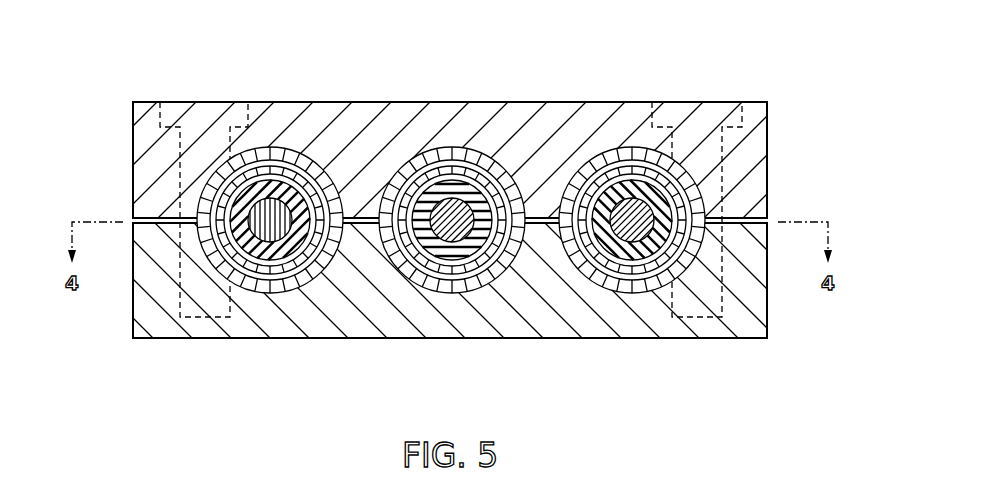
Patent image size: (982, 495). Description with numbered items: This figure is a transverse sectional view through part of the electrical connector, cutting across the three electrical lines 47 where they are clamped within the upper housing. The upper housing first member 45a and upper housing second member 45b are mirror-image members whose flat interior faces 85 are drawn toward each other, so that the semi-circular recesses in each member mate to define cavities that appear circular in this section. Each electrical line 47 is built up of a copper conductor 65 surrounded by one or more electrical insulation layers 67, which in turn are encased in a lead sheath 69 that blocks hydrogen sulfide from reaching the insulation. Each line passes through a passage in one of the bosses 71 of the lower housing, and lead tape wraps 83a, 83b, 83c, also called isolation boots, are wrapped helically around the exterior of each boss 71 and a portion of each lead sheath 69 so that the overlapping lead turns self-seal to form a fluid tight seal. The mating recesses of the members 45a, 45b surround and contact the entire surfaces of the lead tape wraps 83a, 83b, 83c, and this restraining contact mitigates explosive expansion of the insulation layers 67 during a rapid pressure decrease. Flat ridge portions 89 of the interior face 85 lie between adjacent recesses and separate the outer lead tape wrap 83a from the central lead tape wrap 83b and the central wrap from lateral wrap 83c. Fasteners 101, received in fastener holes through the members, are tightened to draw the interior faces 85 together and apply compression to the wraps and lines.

The upper housing first member 45a is at (757, 302).
The upper housing second member 45b is at (757, 142).
The electrical line 47 is at (293, 170).
The copper conductor 65 is at (465, 192).
The electrical insulation layer 67 is at (450, 187).
The lead sheath 69 is at (420, 262).
The boss 71 is at (448, 270).
The lead tape wrap 83a is at (272, 290).
The lead tape wrap 83b is at (500, 270).
The lead tape wrap 83c is at (633, 292).
The interior face 85 is at (732, 224).
The ridge portion 89 is at (530, 223).
The fastener 101 is at (717, 110).